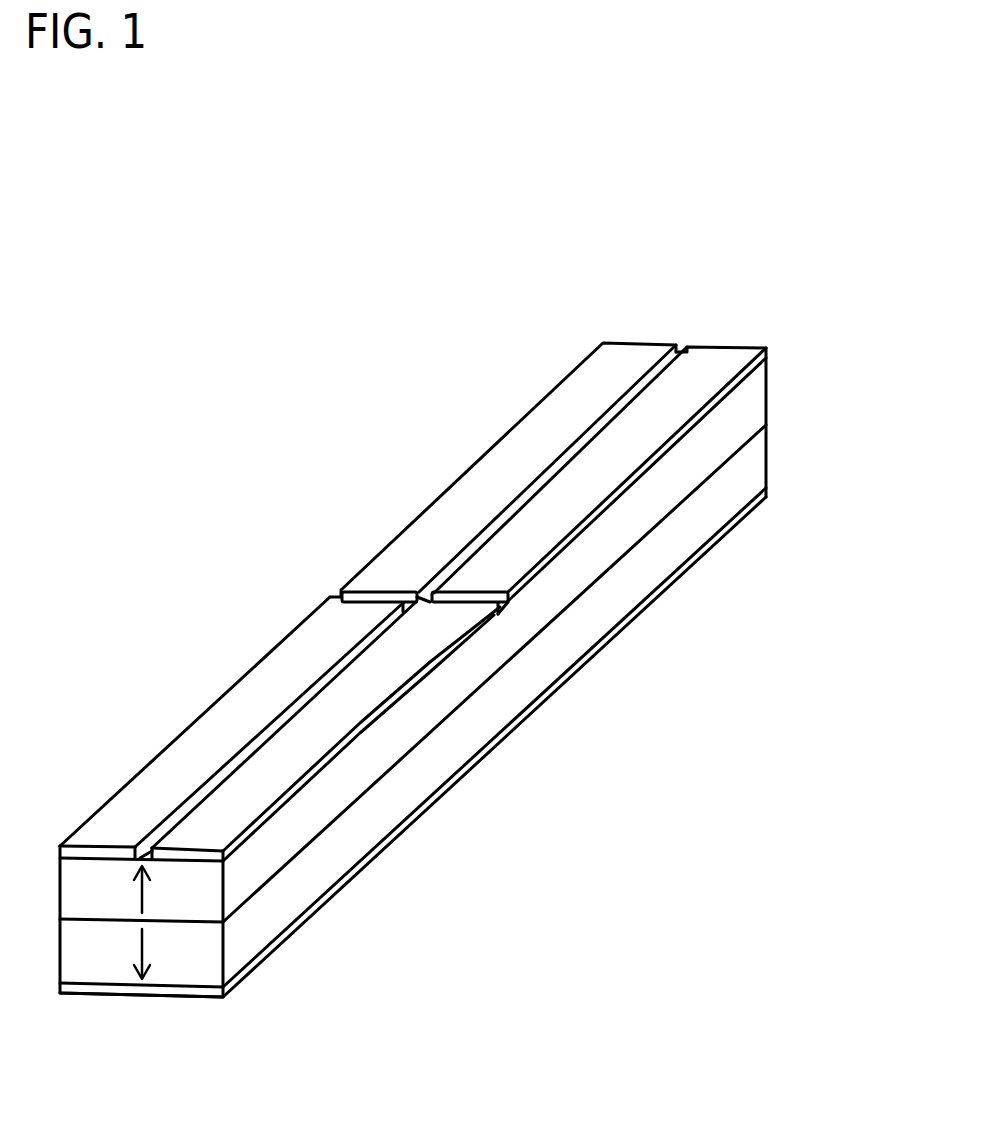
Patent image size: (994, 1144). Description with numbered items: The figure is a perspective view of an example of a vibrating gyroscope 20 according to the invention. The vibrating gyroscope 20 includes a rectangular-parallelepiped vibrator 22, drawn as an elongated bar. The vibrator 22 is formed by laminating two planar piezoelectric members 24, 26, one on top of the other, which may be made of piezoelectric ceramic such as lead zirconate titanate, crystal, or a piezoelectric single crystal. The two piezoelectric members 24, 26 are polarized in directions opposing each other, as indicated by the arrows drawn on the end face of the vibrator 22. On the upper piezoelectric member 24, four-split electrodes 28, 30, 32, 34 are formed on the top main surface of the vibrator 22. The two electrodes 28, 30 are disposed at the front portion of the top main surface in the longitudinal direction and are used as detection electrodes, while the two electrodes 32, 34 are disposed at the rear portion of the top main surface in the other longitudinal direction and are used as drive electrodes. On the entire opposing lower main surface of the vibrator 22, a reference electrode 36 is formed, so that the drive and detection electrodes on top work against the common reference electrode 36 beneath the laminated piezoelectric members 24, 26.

The vibrating gyroscope 20 is at (230, 172).
The vibrator 22 is at (778, 363).
The piezoelectric member 24 is at (477, 655).
The piezoelectric member 26 is at (463, 738).
The electrode 28 is at (238, 713).
The electrode 30 is at (367, 685).
The electrode 32 is at (477, 503).
The electrode 34 is at (585, 477).
The reference electrode 36 is at (370, 862).